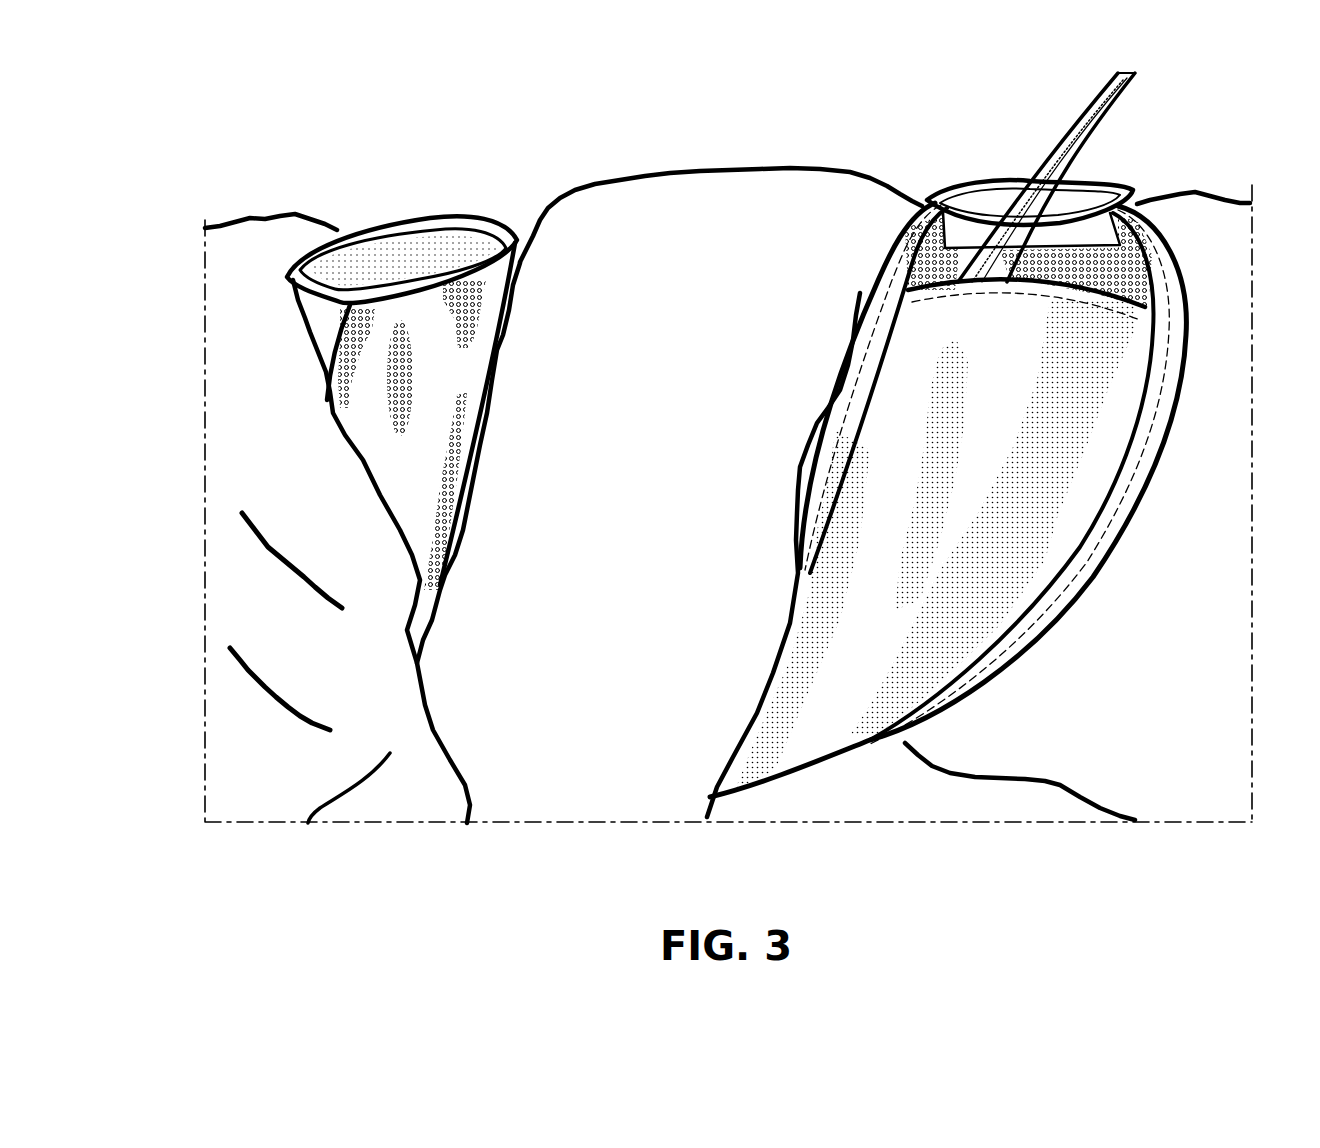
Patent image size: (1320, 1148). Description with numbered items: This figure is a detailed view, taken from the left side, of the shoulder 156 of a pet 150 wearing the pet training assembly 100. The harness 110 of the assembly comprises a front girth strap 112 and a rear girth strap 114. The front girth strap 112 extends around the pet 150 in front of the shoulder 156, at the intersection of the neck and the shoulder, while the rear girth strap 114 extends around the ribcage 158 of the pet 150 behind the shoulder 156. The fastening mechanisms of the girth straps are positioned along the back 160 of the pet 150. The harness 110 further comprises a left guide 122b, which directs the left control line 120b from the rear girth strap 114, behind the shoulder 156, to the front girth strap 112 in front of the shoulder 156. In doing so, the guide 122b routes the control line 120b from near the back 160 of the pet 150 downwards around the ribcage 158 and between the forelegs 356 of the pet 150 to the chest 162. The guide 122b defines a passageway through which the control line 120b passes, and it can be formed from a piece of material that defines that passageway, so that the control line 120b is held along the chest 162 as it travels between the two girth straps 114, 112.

The pet training assembly 100 is at (365, 108).
The harness 110 is at (380, 315).
The front girth strap 112 is at (480, 297).
The rear girth strap 114 is at (1147, 233).
The left control line 120b is at (987, 195).
The left guide 122b is at (943, 623).
The pet 150 is at (207, 380).
The shoulder 156 is at (665, 405).
The ribcage 158 is at (1005, 687).
The back 160 is at (1220, 230).
The chest 162 is at (910, 740).
The forelegs 356 is at (588, 793).